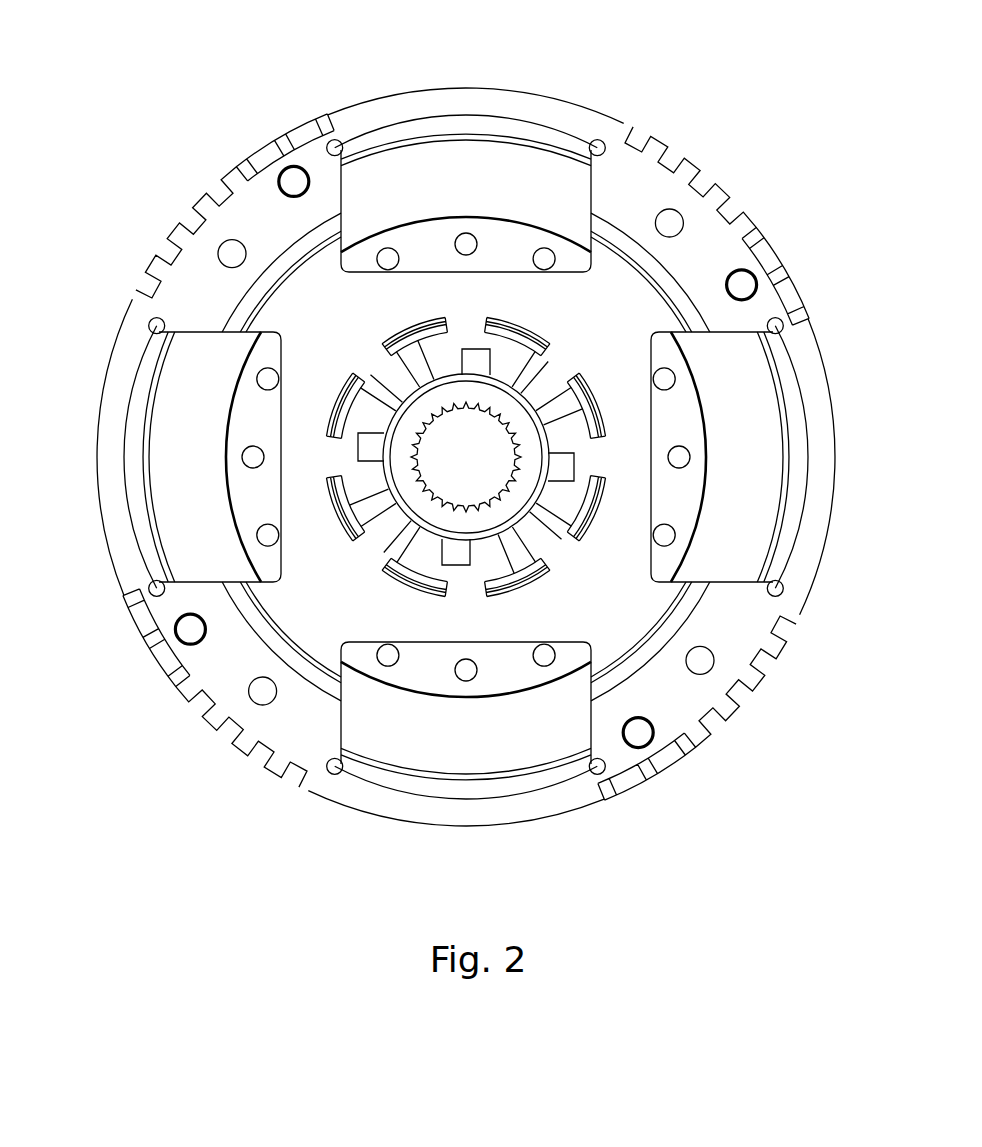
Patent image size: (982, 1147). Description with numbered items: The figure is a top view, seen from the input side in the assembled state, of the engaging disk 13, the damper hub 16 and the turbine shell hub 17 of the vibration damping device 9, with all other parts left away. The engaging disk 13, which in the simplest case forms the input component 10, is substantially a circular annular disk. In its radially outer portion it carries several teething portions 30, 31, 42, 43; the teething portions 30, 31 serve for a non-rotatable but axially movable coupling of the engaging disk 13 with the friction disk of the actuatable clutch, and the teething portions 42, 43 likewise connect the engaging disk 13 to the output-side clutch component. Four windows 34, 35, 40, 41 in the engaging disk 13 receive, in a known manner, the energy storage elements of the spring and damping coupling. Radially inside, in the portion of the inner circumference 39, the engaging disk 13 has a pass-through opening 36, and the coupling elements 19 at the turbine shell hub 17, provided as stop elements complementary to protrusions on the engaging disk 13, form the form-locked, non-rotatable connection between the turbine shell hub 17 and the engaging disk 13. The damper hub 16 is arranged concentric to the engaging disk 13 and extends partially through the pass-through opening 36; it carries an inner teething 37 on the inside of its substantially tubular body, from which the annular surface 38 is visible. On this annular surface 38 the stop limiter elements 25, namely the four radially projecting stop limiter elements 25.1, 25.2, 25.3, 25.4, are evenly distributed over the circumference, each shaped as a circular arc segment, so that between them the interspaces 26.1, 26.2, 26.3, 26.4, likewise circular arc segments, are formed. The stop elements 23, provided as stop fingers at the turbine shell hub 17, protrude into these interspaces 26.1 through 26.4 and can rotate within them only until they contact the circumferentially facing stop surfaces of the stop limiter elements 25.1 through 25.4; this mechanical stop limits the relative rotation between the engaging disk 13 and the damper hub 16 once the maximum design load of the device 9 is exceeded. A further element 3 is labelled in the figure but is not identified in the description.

The outer edge of cover plate 3 is at (778, 528).
The vibration damping device 9 is at (582, 88).
The input component 10 is at (215, 666).
The engaging disk 13 is at (465, 456).
The damper hub 16 is at (472, 400).
The turbine shell hub 17 is at (511, 343).
The coupling elements 19 is at (437, 327).
The stop elements 23 is at (445, 545).
The stop limiter elements 25 is at (482, 568).
The stop limiter element 25.1 is at (433, 375).
The stop limiter element 25.2 is at (558, 447).
The stop limiter element 25.3 is at (537, 513).
The stop limiter element 25.4 is at (383, 493).
The interspace 26.1 is at (393, 400).
The interspace 26.2 is at (528, 388).
The interspace 26.3 is at (553, 517).
The interspace 26.4 is at (408, 515).
The teething portion 30 is at (226, 773).
The teething portion 31 is at (773, 703).
The window 34 is at (540, 148).
The window 35 is at (744, 472).
The pass-through opening 36 is at (466, 396).
The inner teething 37 is at (518, 433).
The annular surface 38 is at (465, 522).
The inner circumference 39 is at (560, 443).
The window 40 is at (590, 718).
The window 41 is at (165, 582).
The teething portion 42 is at (678, 210).
The teething portion 43 is at (192, 250).